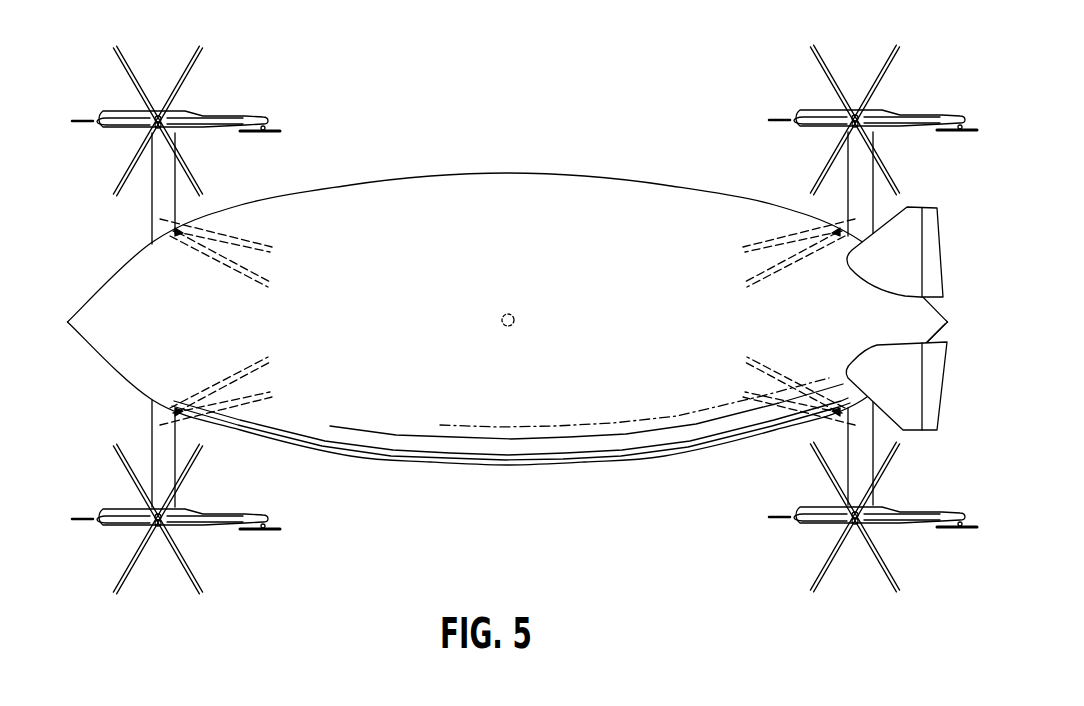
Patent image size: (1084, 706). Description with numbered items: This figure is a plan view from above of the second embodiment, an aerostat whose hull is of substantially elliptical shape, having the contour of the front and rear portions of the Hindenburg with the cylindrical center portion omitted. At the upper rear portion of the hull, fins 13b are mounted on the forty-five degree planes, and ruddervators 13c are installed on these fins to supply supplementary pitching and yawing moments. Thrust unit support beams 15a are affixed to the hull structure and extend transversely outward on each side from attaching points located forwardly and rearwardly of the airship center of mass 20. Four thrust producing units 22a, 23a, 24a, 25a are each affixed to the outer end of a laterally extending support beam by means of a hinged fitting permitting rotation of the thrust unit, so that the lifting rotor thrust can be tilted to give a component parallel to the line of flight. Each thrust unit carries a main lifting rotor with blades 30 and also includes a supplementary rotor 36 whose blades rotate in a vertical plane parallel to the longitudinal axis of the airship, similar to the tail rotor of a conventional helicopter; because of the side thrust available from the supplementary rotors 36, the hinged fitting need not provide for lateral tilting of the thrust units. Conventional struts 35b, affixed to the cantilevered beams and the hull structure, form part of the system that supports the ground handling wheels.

The fins 13b is at (912, 217).
The ruddervators 13c is at (935, 250).
The thrust unit support beams 15a is at (157, 208).
The center of mass 20 is at (503, 313).
The thrust unit 22a is at (210, 66).
The thrust unit 23a is at (112, 557).
The thrust unit 24a is at (817, 96).
The thrust unit 25a is at (809, 555).
The rotor blades 30 is at (184, 73).
The struts 35b is at (180, 231).
The supplementary rotor 36 is at (275, 130).